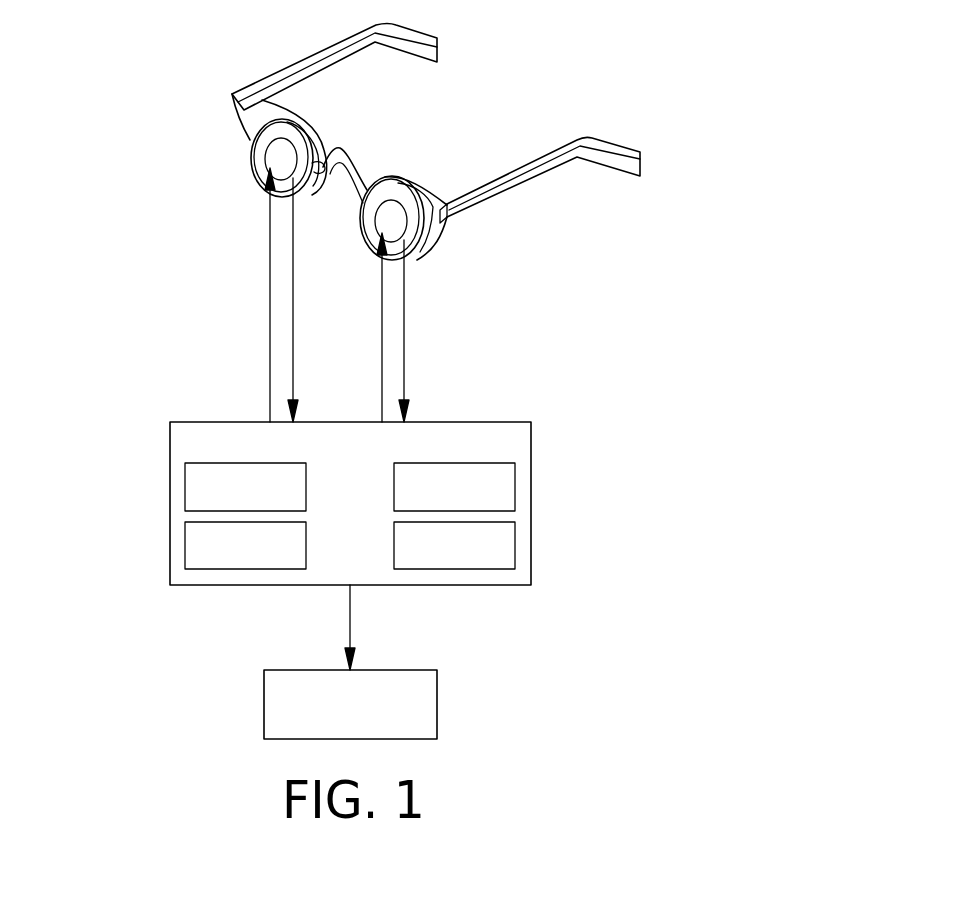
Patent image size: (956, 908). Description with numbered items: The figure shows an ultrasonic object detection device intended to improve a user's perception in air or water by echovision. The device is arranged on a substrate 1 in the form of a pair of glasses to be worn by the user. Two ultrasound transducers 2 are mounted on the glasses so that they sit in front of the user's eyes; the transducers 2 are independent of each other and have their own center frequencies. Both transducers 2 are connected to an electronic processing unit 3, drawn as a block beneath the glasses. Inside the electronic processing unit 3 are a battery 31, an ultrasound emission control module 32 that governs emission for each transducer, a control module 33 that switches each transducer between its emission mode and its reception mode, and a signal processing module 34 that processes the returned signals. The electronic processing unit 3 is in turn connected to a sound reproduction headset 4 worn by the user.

The substrate 1 is at (525, 178).
The transducers 2 is at (272, 158).
The electronic processing unit 3 is at (352, 476).
The battery 31 is at (185, 488).
The ultrasound emission control module 32 is at (185, 548).
The control module 33 is at (515, 473).
The signal processing module 34 is at (515, 534).
The sound reproduction headset 4 is at (437, 697).